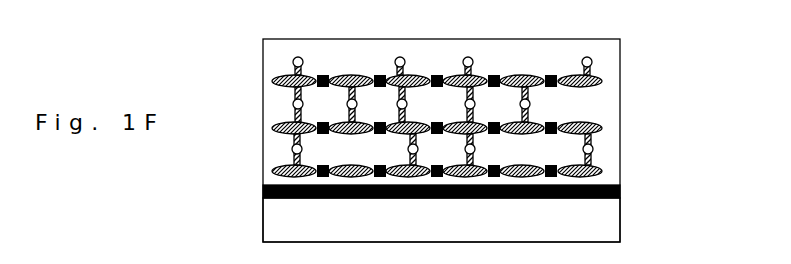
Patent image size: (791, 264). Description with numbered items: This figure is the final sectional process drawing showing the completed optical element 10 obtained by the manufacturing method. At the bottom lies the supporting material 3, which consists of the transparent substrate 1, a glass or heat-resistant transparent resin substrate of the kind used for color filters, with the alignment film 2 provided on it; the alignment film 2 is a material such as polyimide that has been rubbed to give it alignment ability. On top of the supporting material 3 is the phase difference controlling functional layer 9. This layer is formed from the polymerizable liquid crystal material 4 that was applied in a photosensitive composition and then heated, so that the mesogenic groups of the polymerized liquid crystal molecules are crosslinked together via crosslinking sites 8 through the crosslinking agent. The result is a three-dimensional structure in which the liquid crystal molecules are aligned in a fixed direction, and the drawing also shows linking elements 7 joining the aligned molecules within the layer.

The transparent substrate 1 is at (603, 229).
The alignment film 2 is at (620, 187).
The supporting material 3 is at (511, 207).
The polymerizable liquid crystal material 4 is at (603, 127).
The linker (black square) 7 is at (558, 123).
The crosslinking sites 8 is at (593, 141).
The phase difference controlling functional layer 9 is at (514, 115).
The optical element 10 is at (641, 49).